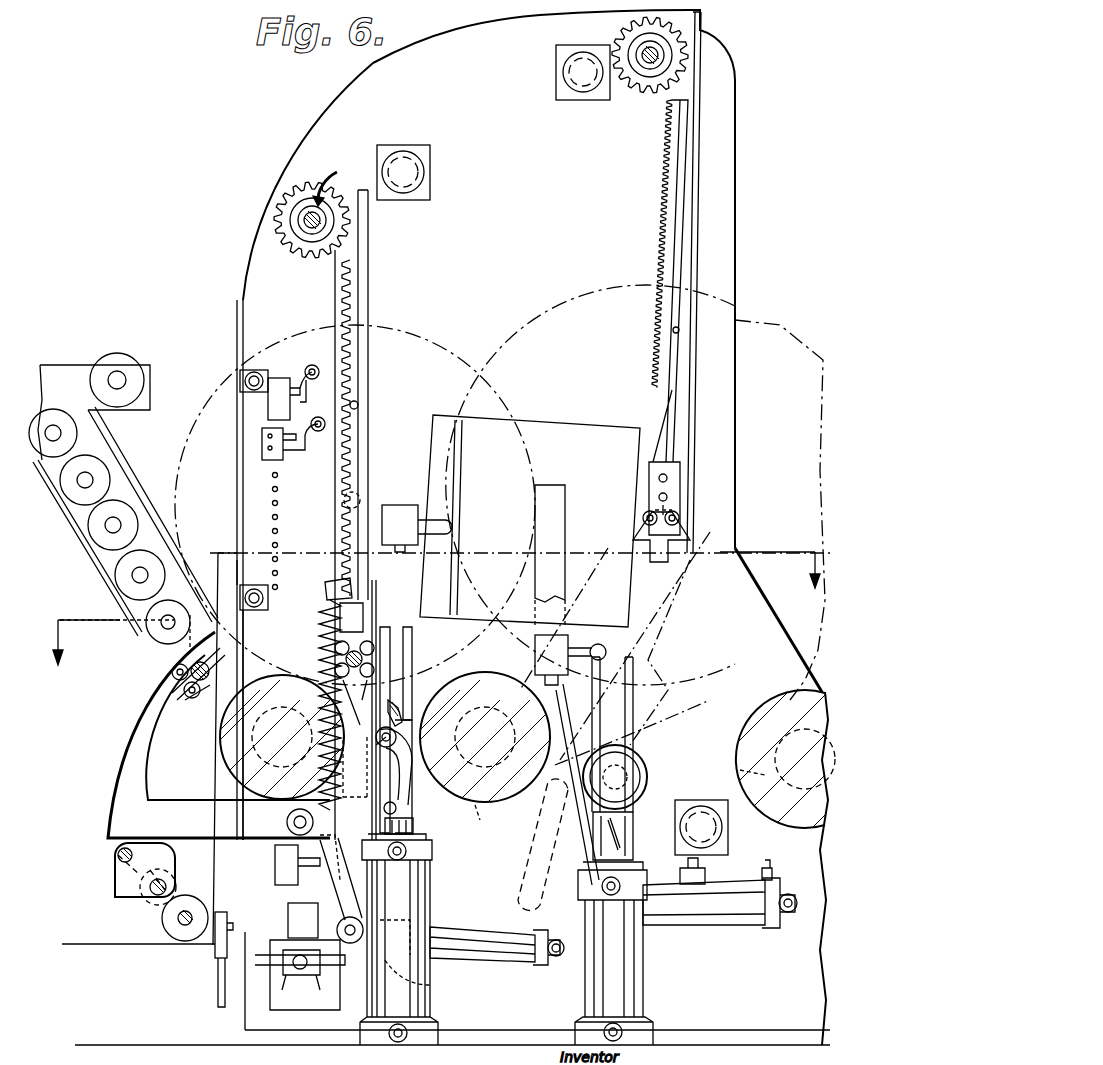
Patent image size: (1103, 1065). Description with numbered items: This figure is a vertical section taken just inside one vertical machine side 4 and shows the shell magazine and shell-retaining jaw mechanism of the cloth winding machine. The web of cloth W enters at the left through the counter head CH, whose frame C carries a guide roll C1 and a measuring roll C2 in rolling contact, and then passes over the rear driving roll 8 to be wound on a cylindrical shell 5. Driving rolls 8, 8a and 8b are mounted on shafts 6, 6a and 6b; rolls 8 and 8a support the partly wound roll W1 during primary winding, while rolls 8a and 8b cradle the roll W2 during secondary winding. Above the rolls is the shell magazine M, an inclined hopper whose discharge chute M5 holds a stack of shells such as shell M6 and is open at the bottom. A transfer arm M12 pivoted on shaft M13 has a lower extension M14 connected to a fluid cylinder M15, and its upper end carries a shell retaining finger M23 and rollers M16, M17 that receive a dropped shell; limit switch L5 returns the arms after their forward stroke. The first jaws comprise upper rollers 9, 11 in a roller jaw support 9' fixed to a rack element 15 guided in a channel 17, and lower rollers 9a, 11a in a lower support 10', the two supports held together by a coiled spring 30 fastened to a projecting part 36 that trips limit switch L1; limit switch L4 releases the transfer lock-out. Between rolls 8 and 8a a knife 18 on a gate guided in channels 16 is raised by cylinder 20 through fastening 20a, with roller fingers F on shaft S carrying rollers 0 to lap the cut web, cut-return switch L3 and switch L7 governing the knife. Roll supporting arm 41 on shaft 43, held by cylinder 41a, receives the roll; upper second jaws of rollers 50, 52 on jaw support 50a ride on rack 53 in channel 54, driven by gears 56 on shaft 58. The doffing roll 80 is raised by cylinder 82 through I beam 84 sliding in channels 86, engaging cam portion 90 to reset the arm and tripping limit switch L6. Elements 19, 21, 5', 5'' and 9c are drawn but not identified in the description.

The vertical machine side 4 is at (243, 292).
The direction arrow 19 is at (334, 176).
The gear 21 is at (302, 250).
The rack element 15 is at (356, 276).
The channel means 17 is at (336, 293).
The pin 5' is at (375, 475).
The gear 56 is at (635, 80).
The shaft 58 is at (650, 68).
The rack 53 is at (686, 260).
The channel member 54 is at (668, 245).
The jaw support 50a is at (678, 480).
The pin 5'' is at (685, 494).
The roller 50 is at (643, 518).
The roller 52 is at (680, 518).
The partly wound roll W1 is at (240, 370).
The roll of cloth W2 is at (755, 312).
The shell magazine M is at (160, 372).
The discharge chute M5 is at (82, 515).
The limit switch L4 is at (280, 380).
The limit switch L1 is at (266, 455).
The cut return limit switch L3 is at (394, 506).
The roll supporting arm 41 is at (548, 490).
The limit switch L6 is at (553, 648).
The projecting part 36 is at (330, 590).
The coiled spring 30 is at (325, 612).
The roller jaw support 9' is at (374, 597).
The upper roller jaw 9 is at (329, 638).
The lower roller jaw 9a is at (333, 666).
The cylindrical shell 5 is at (387, 710).
The upper roller jaw 11 is at (393, 628).
The lower roller jaw 11a is at (396, 660).
The lower roller jaw support 10' is at (399, 726).
The channel means 16 is at (415, 692).
The knife 18 is at (399, 706).
The shaft S is at (394, 766).
The roller 0 is at (378, 748).
The roller finger F is at (406, 803).
The fastening 20a is at (414, 824).
The driving roll 8 is at (250, 778).
The driving roll 8a is at (510, 805).
The driving roll shaft 6a is at (476, 803).
The shaft 43 is at (528, 828).
The driving roll shaft 6b is at (745, 757).
The forward driving roll 8b is at (742, 785).
The channel member 86 is at (652, 724).
The doffing roll 80 is at (640, 765).
The cam portion 90 is at (586, 720).
The transverse member 84 is at (620, 830).
The pneumatic cylinder 82 is at (645, 985).
The fluid cylinder 41a is at (705, 922).
The fluid cylinder 20 is at (428, 882).
The fluid pressure cylinder M15 is at (450, 925).
The extension M14 is at (330, 882).
The link 9c is at (345, 850).
The limit switch L7 is at (295, 880).
The shaft M13 is at (282, 890).
The driving roll shaft 6 is at (285, 828).
The transfer arm M12 is at (120, 775).
The shell M6 is at (150, 645).
The roller M16 is at (188, 700).
The shell retaining finger M23 is at (212, 680).
The roller M17 is at (198, 695).
The counter head CH is at (110, 863).
The measuring roll C2 is at (178, 870).
The guide roll C1 is at (188, 895).
The frame C is at (118, 893).
The web of cloth W is at (88, 947).
The limit switch L5 is at (218, 940).